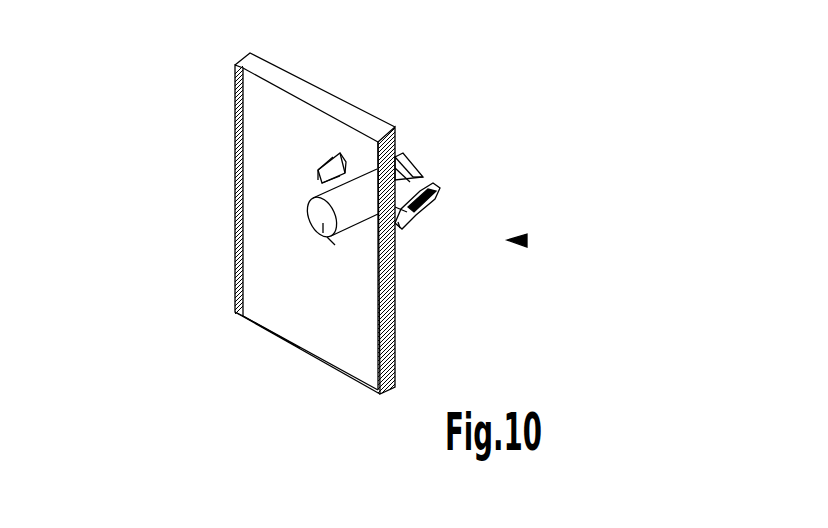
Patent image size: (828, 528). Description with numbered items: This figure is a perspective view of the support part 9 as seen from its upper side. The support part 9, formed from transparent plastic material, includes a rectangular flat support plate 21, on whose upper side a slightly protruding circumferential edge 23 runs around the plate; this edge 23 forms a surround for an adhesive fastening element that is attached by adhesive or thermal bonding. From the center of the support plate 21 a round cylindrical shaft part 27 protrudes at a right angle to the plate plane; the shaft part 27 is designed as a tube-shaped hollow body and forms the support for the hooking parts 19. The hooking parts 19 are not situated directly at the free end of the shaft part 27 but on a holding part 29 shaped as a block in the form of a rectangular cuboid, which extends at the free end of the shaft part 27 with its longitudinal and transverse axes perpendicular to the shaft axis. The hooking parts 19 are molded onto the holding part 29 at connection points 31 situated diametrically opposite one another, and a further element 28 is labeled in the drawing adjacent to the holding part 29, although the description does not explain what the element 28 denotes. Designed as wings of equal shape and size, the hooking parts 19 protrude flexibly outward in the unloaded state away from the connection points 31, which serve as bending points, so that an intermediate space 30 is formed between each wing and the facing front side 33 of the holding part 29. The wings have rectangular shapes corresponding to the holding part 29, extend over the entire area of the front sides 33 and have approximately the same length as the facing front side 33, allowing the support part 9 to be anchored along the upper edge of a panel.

The support part 9 is at (527, 241).
The hooking part 19 is at (327, 172).
The support plate 21 is at (273, 290).
The circumferential edge 23 is at (280, 338).
The shaft part 27 is at (327, 237).
The fastening projection 28 is at (328, 166).
The holding part 29 is at (403, 172).
The intermediate space 30 is at (333, 188).
The connection point 31 is at (333, 157).
The front side 33 is at (418, 186).